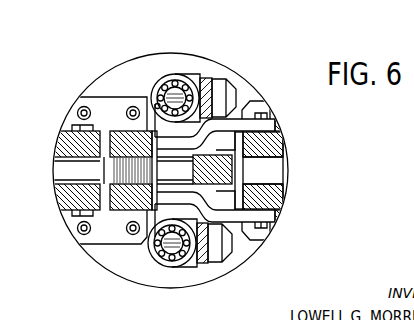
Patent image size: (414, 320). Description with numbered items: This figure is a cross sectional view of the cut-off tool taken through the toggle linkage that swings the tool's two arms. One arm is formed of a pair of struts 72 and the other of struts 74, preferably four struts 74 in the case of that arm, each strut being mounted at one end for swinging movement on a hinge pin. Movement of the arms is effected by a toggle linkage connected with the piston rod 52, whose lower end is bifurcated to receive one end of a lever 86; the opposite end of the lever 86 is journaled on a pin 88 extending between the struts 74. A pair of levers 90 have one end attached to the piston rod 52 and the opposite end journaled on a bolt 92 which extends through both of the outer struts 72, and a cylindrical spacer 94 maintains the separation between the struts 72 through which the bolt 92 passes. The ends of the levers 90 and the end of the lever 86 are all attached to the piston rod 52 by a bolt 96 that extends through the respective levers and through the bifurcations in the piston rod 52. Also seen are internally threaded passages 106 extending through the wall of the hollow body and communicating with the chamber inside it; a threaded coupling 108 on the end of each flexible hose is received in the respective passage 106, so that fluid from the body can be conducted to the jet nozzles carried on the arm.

The piston rod 52 is at (177, 184).
The struts 72 is at (270, 148).
The struts 74 is at (93, 143).
The lever 86 is at (107, 170).
The pin 88 is at (73, 124).
The levers 90 is at (232, 122).
The bolt 92 is at (268, 112).
The cylindrical spacer 94 is at (268, 172).
The bolt 96 is at (156, 104).
The internally threaded passages 106 is at (222, 84).
The threaded coupling 108 is at (209, 80).